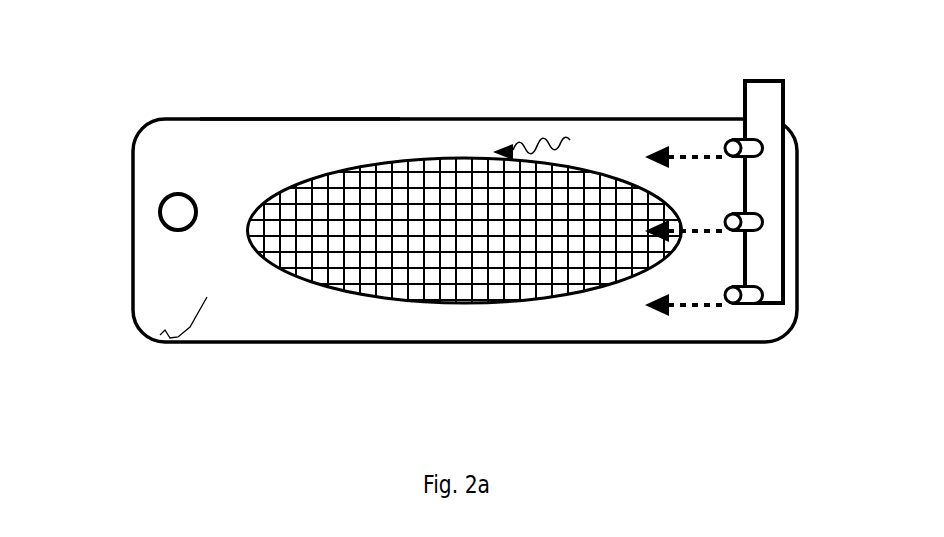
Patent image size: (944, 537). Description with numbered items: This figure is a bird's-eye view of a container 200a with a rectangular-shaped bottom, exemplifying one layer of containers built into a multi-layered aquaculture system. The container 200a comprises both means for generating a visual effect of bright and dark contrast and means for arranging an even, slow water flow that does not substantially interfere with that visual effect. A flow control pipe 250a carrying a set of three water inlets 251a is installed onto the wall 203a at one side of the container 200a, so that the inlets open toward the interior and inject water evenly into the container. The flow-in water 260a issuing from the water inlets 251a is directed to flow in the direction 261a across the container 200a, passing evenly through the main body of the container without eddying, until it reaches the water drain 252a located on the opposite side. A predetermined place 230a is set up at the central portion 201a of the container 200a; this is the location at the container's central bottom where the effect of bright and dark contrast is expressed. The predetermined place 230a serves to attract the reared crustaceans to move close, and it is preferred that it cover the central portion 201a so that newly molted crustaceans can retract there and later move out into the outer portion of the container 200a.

The container 200a is at (465, 220).
The central portion 201a is at (152, 340).
The wall 203a is at (297, 118).
The predetermined place 230a is at (492, 237).
The flow control pipe 250a is at (765, 81).
The water inlets 251a is at (762, 142).
The water drain 252a is at (160, 212).
The flow-in water 260a is at (660, 228).
The direction 261a is at (502, 152).